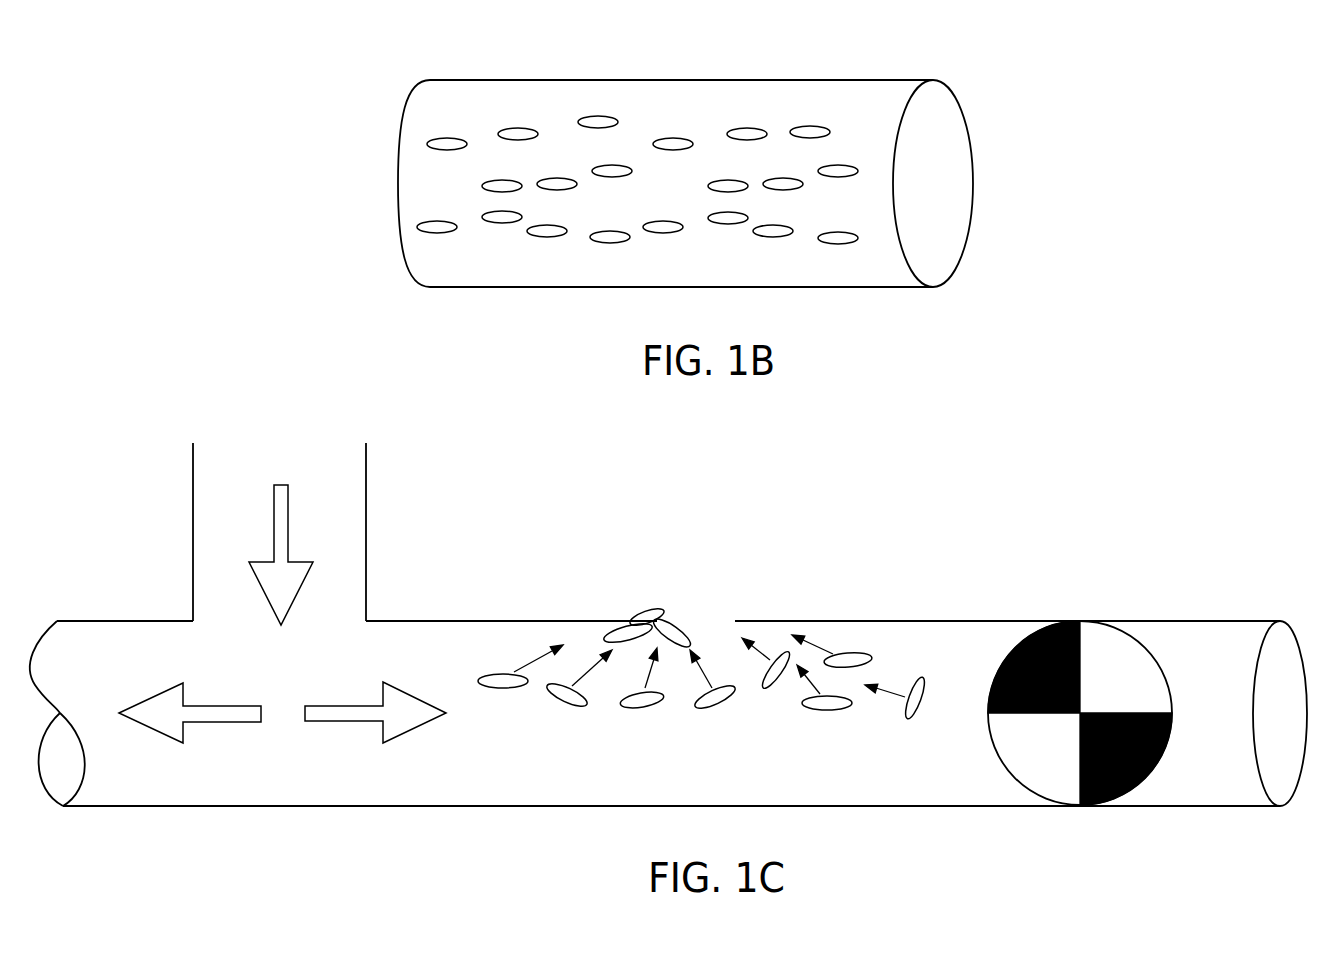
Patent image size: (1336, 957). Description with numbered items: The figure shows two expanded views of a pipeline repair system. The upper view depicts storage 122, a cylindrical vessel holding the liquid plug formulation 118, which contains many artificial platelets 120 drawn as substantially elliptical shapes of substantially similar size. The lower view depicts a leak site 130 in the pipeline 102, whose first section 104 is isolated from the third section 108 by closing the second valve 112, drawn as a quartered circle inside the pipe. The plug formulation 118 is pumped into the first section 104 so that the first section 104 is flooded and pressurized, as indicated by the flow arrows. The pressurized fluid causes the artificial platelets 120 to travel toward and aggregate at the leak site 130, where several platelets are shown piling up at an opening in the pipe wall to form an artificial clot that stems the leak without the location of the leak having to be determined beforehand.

In FIG. 1C, the pipeline 102 is at (304, 821).
In FIG. 1C, the first section 104 is at (100, 621).
In FIG. 1C, the third section 108 is at (1180, 621).
In FIG. 1C, the second valve 112 is at (1078, 807).
In FIG. 1B, the liquid plug formulation 118 is at (911, 183).
In FIG. 1B, the artificial platelets 120 is at (673, 120).
In FIG. 1C, the artificial platelets 120 is at (828, 728).
In FIG. 1B, the storage 122 is at (388, 113).
In FIG. 1C, the leak site 130 is at (772, 592).